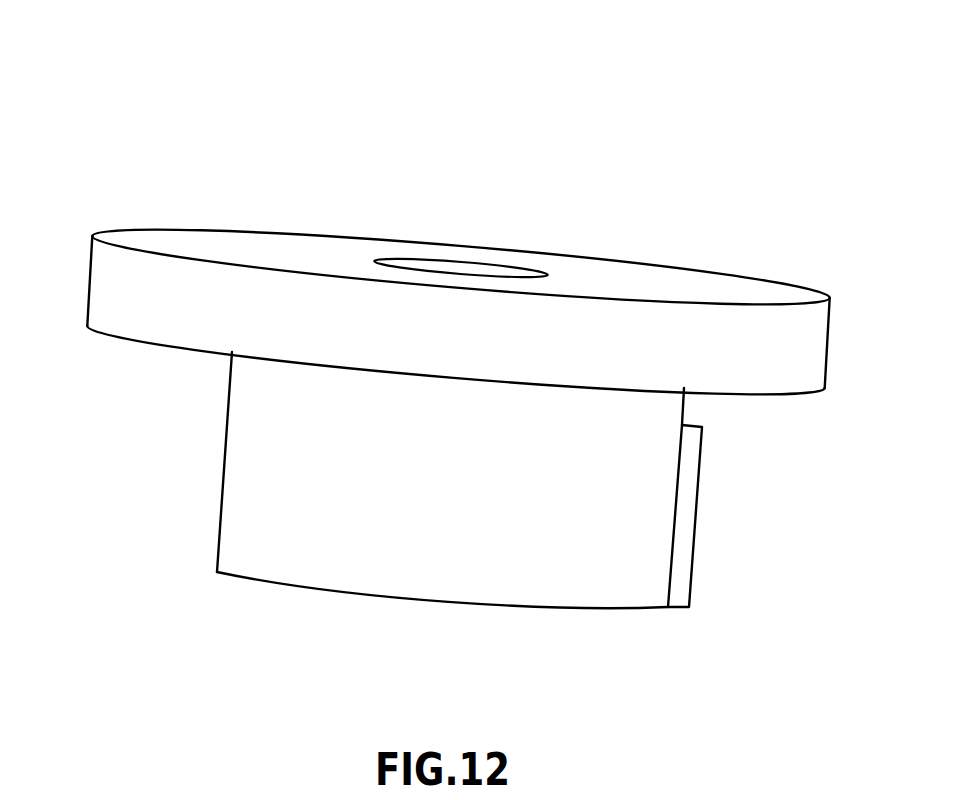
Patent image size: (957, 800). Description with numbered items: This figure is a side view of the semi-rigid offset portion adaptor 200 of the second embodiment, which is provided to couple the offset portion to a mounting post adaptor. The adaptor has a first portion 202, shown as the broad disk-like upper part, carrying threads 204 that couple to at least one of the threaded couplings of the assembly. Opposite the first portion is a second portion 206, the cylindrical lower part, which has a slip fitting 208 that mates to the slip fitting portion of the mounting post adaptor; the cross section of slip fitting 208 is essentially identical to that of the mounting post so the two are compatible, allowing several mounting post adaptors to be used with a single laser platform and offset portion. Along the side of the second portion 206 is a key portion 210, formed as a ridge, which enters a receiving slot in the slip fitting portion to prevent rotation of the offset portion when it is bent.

The offset portion adaptor 200 is at (136, 106).
The first portion 202 is at (98, 333).
The threads 204 is at (467, 273).
The second portion 206 is at (192, 542).
The slip fitting 208 is at (345, 594).
The key portion 210 is at (695, 513).